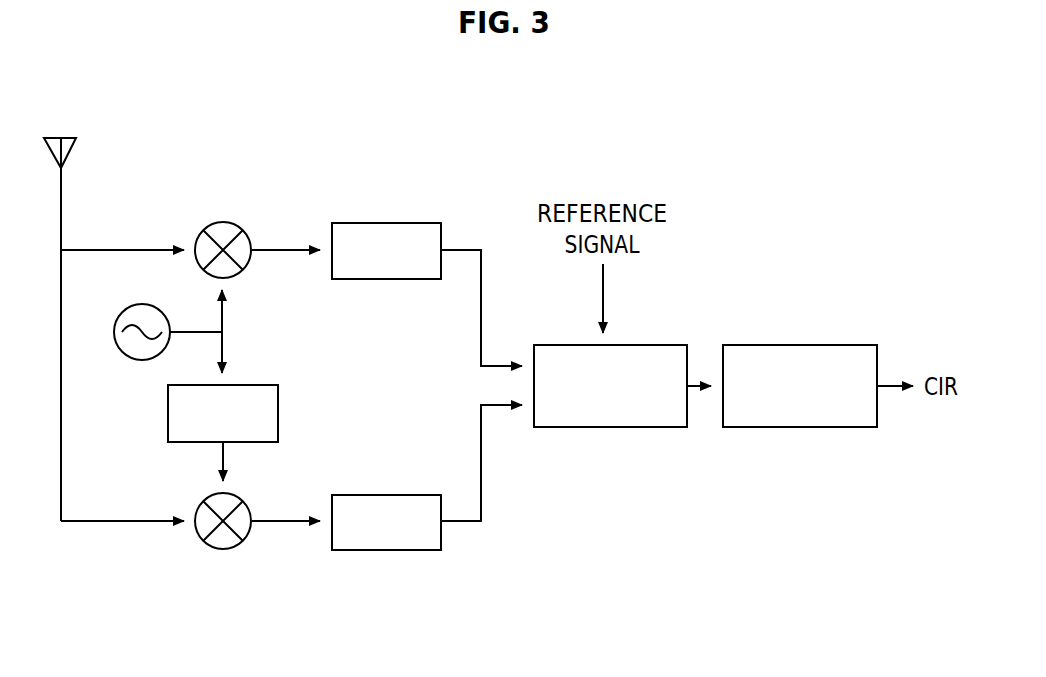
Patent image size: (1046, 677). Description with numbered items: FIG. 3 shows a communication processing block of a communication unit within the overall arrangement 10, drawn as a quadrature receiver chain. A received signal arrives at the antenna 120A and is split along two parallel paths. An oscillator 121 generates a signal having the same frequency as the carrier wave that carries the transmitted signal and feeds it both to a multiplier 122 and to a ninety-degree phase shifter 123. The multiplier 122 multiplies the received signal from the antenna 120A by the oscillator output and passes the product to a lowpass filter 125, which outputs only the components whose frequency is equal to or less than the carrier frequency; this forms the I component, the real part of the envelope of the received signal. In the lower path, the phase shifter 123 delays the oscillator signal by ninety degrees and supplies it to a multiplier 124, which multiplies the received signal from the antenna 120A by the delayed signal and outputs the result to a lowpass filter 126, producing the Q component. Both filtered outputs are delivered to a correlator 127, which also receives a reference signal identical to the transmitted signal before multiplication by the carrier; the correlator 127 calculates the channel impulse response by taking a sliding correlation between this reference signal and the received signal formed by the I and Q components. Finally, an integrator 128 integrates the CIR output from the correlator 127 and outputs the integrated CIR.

The radar device / receiver system 10 is at (806, 136).
The antenna 120A is at (65, 137).
The oscillator 121 is at (139, 303).
The multiplier 122 is at (241, 226).
The 90° phase shifter 123 is at (259, 384).
The multiplier 124 is at (242, 498).
The lowpass filter (LPF) 125 is at (416, 221).
The LPF 126 is at (416, 493).
The correlator 127 is at (664, 343).
The integrator 128 is at (854, 343).